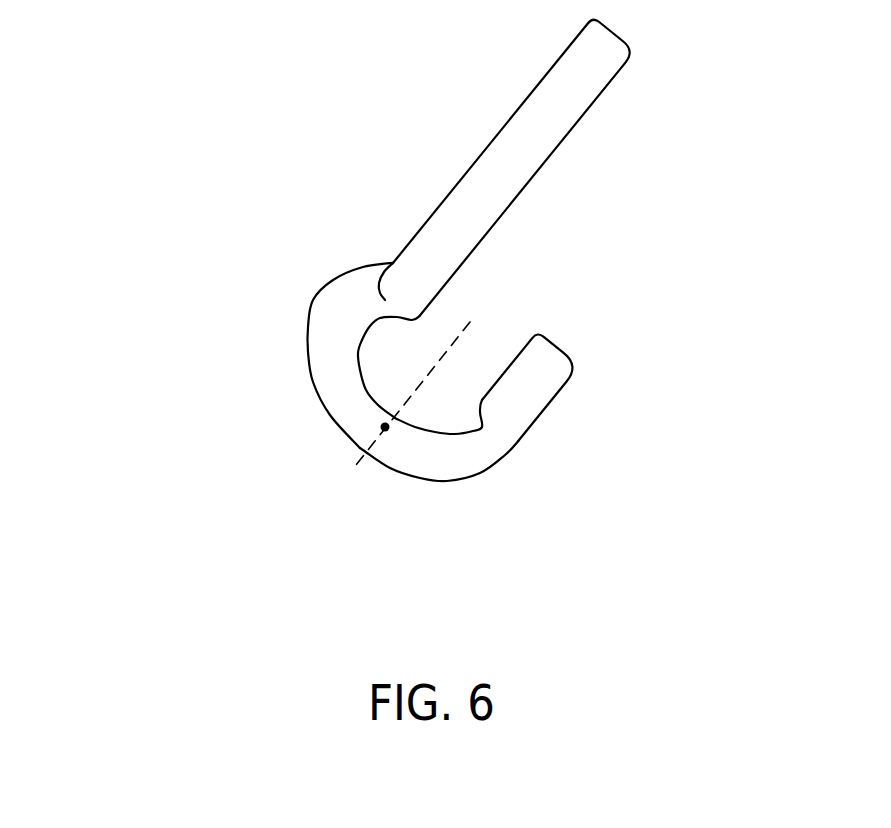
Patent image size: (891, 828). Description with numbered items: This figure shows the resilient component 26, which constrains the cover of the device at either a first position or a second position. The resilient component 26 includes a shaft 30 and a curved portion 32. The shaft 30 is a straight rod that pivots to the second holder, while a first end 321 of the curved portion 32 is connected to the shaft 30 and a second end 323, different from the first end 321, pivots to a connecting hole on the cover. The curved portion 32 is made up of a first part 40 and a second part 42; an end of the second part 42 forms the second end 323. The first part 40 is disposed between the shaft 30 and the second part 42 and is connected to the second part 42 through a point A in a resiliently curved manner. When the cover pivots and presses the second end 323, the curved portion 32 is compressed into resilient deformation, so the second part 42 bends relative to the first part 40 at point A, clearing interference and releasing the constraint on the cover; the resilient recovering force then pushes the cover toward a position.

The resilient component 26 is at (708, 137).
The shaft 30 is at (523, 138).
The curved portion 32 is at (336, 413).
The first end 321 is at (391, 262).
The second end 323 is at (534, 432).
The first part 40 is at (340, 380).
The second part 42 is at (438, 463).